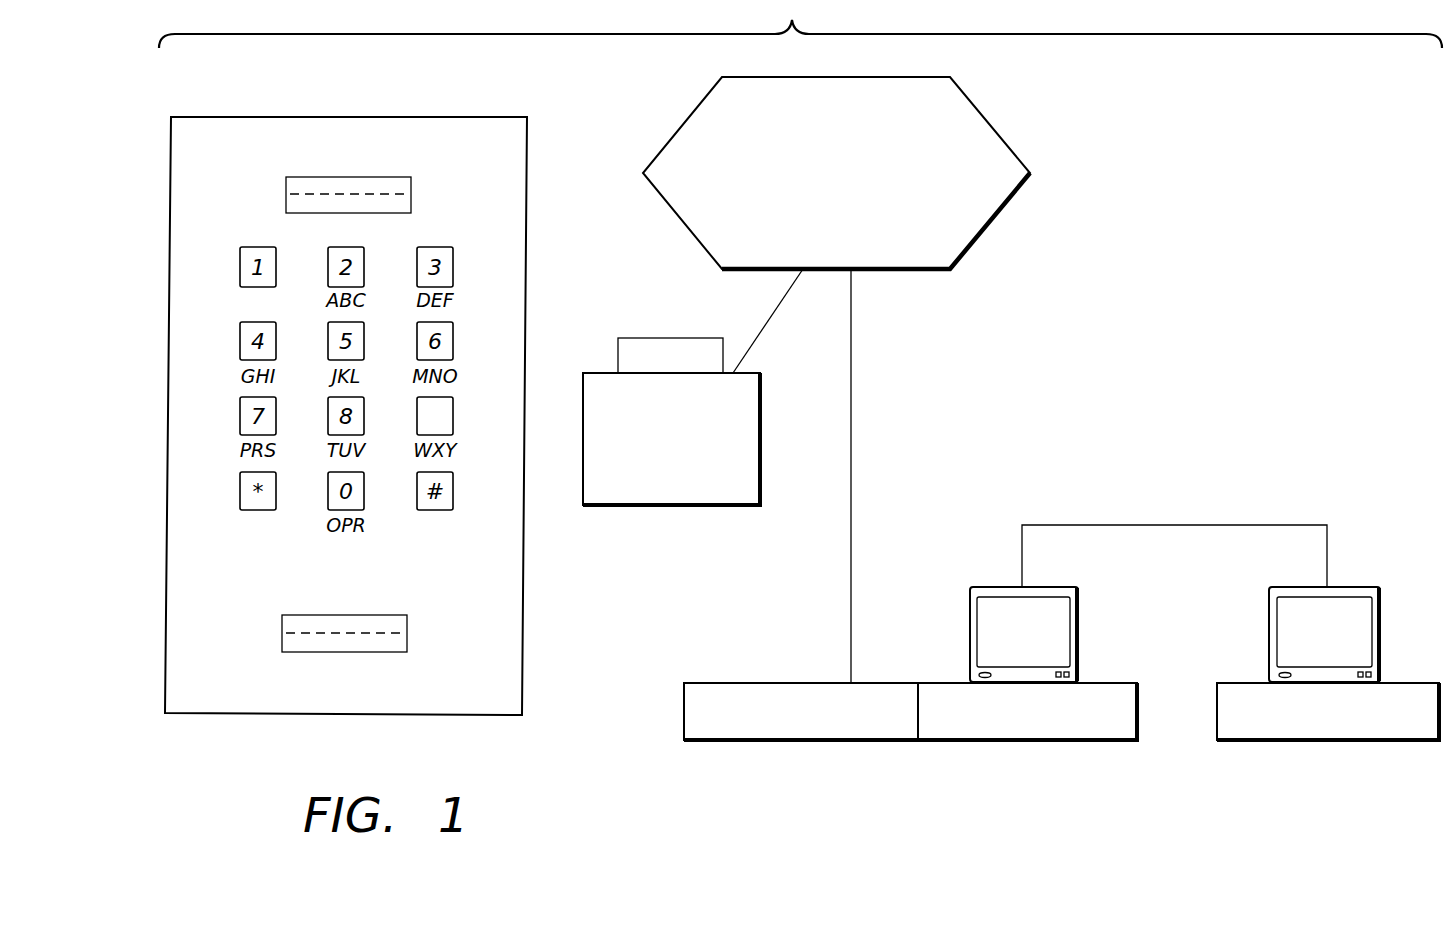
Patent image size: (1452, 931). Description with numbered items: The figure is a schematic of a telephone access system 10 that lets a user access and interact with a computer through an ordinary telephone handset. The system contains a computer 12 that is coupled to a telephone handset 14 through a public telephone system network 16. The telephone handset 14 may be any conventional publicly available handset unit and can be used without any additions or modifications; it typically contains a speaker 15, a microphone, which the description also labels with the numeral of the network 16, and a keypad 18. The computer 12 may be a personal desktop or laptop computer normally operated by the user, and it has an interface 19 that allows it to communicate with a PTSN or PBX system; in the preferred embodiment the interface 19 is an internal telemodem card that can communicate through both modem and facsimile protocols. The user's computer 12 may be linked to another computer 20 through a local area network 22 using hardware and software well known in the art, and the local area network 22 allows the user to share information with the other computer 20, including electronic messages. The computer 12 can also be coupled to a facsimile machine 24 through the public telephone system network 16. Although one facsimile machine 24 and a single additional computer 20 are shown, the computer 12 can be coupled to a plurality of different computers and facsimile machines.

The telephone access system 10 is at (1163, 256).
The computer 12 is at (1018, 740).
The telephone handset 14 is at (523, 613).
The speaker 15 is at (286, 189).
The public telephone system network 16 is at (407, 625).
The keypad 18 is at (453, 413).
The interface 19 is at (747, 740).
The another computer 20 is at (1358, 740).
The local area network 22 is at (1268, 434).
The facsimile machine 24 is at (655, 471).